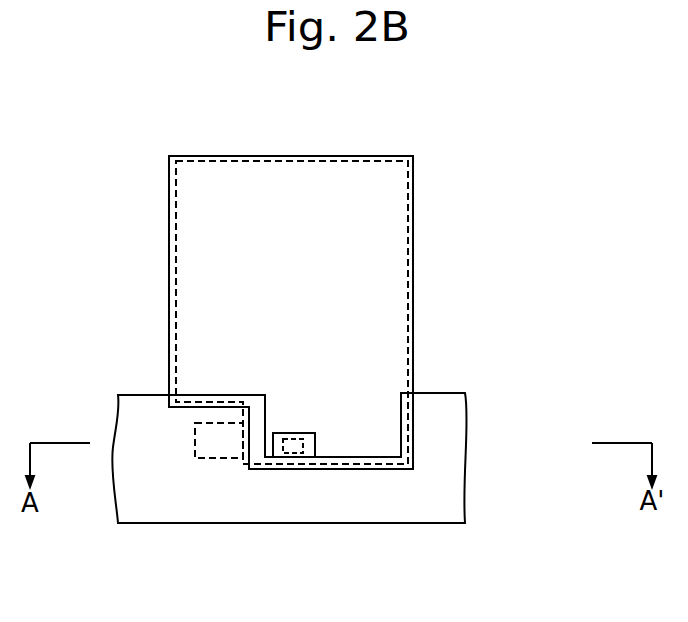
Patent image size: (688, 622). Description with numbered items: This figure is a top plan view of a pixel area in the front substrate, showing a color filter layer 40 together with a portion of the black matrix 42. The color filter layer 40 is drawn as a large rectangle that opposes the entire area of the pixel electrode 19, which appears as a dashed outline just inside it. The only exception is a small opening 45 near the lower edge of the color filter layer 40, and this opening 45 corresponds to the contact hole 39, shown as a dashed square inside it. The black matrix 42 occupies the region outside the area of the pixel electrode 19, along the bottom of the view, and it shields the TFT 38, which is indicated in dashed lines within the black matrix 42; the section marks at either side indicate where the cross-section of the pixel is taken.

The pixel electrode 19 is at (354, 158).
The color filter layer 40 is at (413, 190).
The black matrix 42 is at (445, 452).
The opening 45 is at (298, 433).
The contact hole 39 is at (305, 437).
The TFT 38 is at (218, 458).